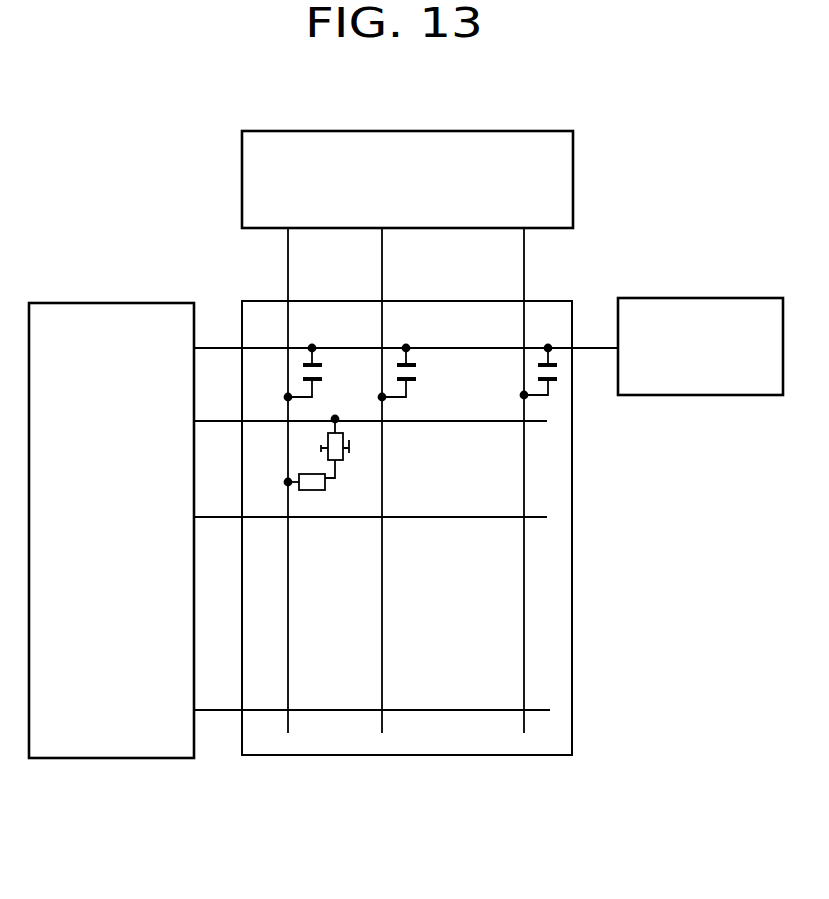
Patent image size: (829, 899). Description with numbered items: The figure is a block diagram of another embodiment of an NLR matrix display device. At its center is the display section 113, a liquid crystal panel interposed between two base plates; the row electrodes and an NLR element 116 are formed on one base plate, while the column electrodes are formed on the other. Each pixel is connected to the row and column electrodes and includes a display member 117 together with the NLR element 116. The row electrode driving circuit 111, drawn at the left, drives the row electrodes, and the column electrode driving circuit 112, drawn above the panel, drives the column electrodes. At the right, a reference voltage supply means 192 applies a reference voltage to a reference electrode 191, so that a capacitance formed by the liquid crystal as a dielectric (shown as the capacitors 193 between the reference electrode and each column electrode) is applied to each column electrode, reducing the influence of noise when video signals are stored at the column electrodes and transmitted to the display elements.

The row electrode driving circuit 111 is at (128, 280).
The column electrode driving circuit 112 is at (346, 108).
The display section 113 is at (574, 718).
The NLR element 116 is at (355, 443).
The display member 117 is at (320, 492).
The reference electrode 191 is at (588, 347).
The reference voltage supply means 192 is at (708, 277).
The capacitor 193 is at (560, 368).